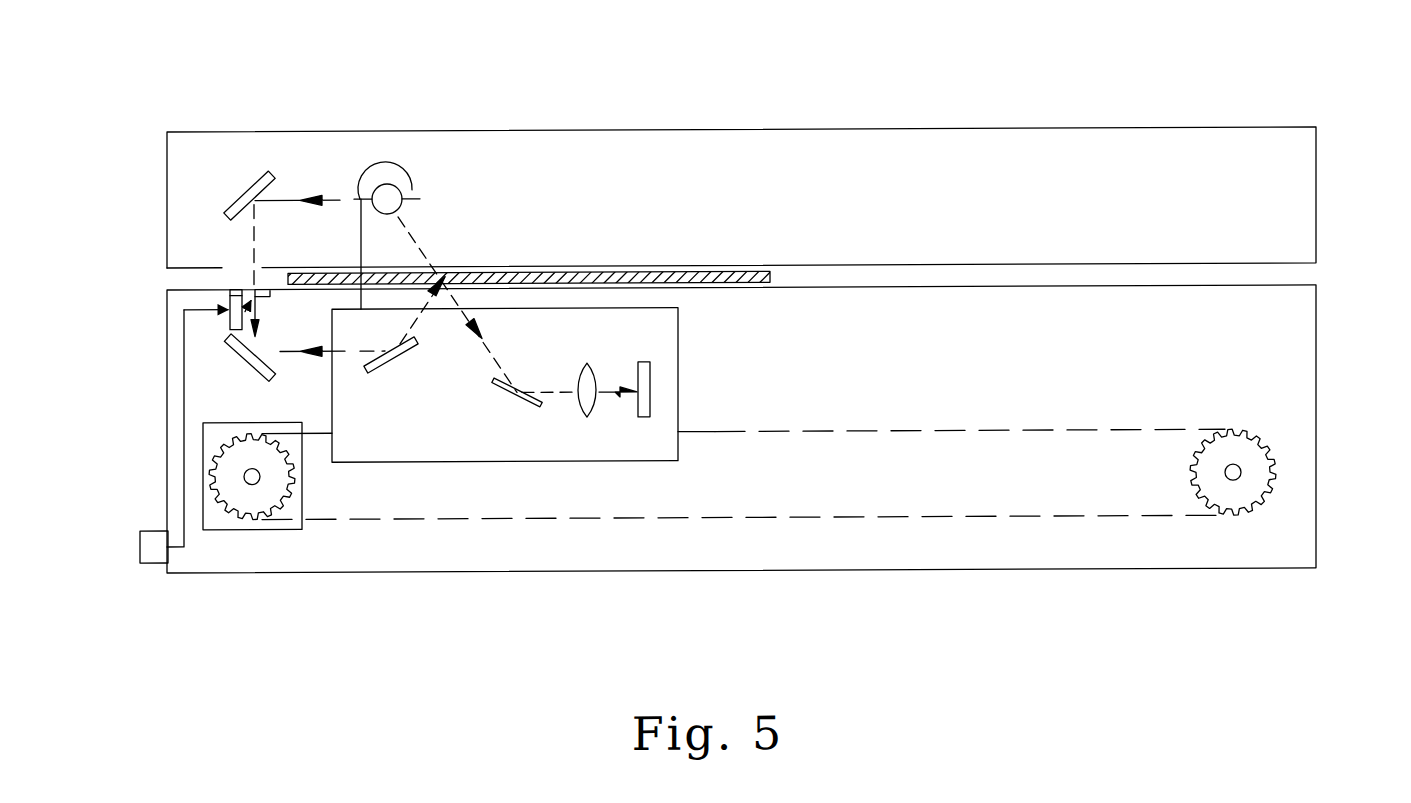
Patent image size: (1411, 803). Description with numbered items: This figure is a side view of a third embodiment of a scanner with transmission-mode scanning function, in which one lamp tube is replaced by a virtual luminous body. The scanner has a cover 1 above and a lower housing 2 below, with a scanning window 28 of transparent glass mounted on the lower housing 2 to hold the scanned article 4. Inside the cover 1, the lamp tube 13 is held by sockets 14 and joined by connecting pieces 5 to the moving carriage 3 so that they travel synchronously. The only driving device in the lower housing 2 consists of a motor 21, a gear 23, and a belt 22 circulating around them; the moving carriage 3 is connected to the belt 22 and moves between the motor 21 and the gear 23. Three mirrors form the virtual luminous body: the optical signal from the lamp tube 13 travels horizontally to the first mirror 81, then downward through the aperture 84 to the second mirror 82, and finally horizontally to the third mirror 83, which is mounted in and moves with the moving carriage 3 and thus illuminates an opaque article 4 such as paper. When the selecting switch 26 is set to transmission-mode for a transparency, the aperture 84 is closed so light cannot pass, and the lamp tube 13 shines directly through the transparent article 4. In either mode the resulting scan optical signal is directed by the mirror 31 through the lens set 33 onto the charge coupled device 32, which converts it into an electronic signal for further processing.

The cover 1 is at (167, 176).
The lower housing 2 is at (1180, 578).
The moving carriage 3 is at (370, 453).
The scanned article 4 is at (255, 283).
The connecting pieces 5 is at (363, 247).
The lamp tube 13 is at (420, 200).
The sockets 14 is at (390, 173).
The motor 21 is at (203, 468).
The belt 22 is at (1043, 521).
The gear 23 is at (1276, 476).
The selecting switch 26 is at (138, 553).
The scanning window 28 is at (732, 290).
The mirror 31 is at (508, 394).
The charge coupled device 32 is at (650, 383).
The lens set 33 is at (580, 405).
The first mirror 81 is at (240, 200).
The second mirror 82 is at (238, 362).
The third mirror 83 is at (405, 360).
The aperture 84 is at (262, 290).